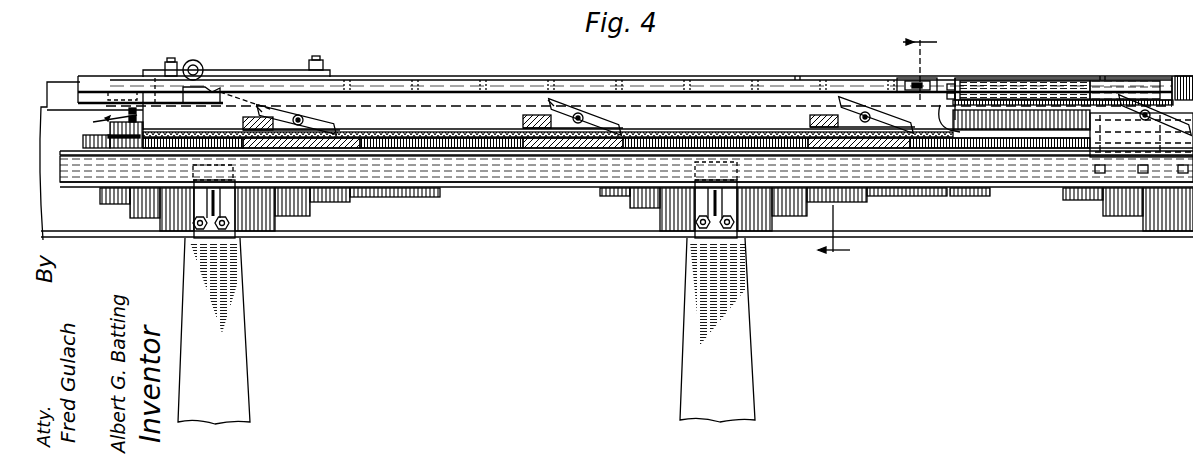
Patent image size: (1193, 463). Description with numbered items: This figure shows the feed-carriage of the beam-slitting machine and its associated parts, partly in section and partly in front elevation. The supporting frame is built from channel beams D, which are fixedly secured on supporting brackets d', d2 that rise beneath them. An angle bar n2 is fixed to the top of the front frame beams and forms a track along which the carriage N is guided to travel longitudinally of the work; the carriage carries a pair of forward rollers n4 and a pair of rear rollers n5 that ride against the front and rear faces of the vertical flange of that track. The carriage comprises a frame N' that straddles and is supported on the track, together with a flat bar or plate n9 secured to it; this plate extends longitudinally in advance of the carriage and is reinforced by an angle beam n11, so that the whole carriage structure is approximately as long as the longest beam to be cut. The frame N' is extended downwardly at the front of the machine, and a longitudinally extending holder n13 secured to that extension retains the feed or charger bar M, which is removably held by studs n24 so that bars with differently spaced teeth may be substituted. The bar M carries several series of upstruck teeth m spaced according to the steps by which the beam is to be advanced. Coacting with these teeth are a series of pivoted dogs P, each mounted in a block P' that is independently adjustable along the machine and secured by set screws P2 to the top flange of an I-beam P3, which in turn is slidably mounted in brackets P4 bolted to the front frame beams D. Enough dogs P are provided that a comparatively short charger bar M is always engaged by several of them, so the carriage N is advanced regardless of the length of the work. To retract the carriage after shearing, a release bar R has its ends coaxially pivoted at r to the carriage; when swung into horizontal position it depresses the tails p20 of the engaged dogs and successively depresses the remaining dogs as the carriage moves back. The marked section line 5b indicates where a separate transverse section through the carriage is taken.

The carriage N is at (635, 83).
The carriage frame N' is at (619, 70).
The angle bar n2 is at (1185, 78).
The forward rollers n4 is at (930, 82).
The rear rollers n5 is at (121, 88).
The flat bar or plate n9 is at (795, 75).
The angle beam n11 is at (1040, 87).
The holder n13 is at (925, 138).
The studs n24 is at (940, 112).
The release bar R is at (203, 86).
The pivot r is at (945, 118).
The tails of the dogs p20 is at (272, 110).
The pivoted dogs P is at (717, 89).
The block P' is at (626, 184).
The set screws P2 is at (1090, 173).
The I-beam P3 is at (575, 175).
The brackets P4 is at (227, 208).
The upstruck teeth m is at (426, 140).
The feed or charger bar M is at (520, 147).
The channel beams D is at (567, 240).
The supporting bracket d' is at (230, 331).
The supporting bracket d2 is at (742, 297).
The section line 5b is at (877, 147).